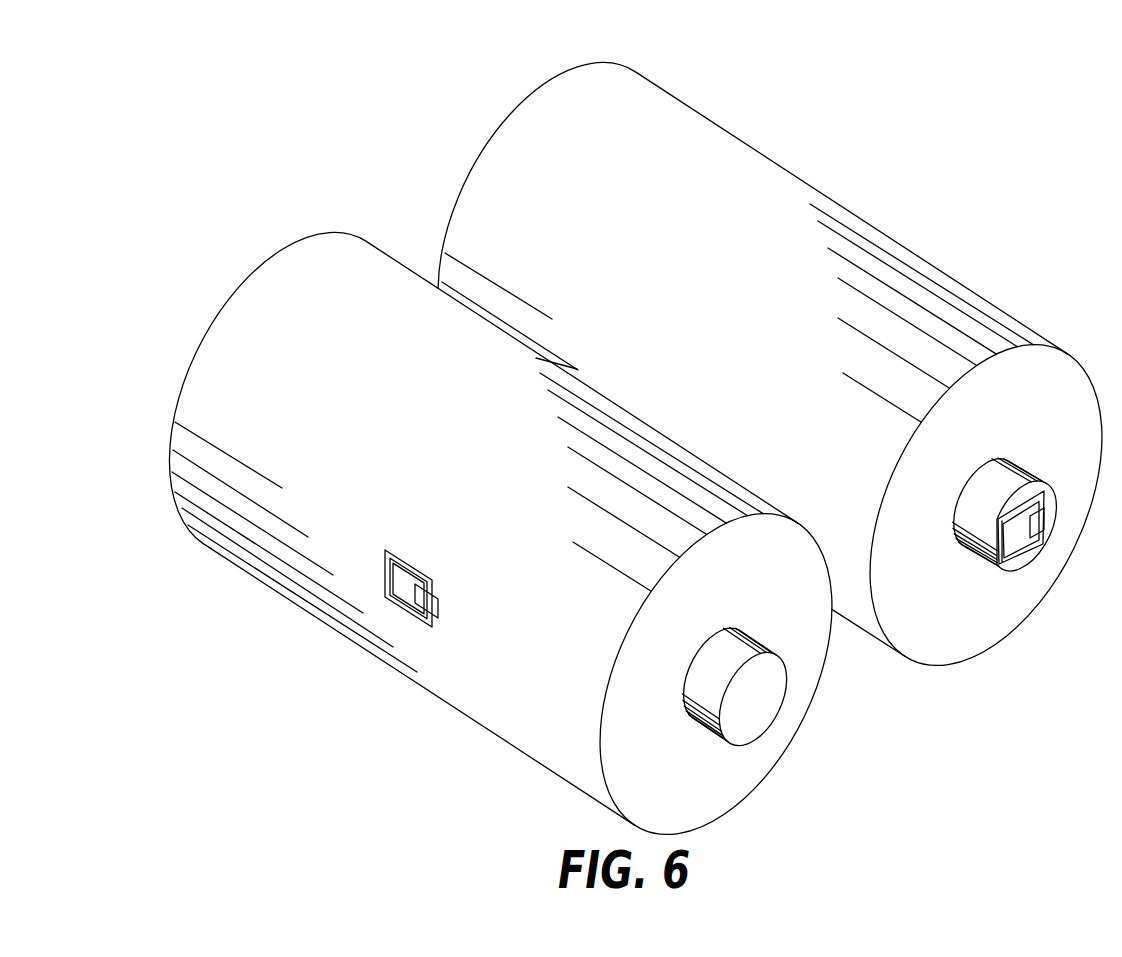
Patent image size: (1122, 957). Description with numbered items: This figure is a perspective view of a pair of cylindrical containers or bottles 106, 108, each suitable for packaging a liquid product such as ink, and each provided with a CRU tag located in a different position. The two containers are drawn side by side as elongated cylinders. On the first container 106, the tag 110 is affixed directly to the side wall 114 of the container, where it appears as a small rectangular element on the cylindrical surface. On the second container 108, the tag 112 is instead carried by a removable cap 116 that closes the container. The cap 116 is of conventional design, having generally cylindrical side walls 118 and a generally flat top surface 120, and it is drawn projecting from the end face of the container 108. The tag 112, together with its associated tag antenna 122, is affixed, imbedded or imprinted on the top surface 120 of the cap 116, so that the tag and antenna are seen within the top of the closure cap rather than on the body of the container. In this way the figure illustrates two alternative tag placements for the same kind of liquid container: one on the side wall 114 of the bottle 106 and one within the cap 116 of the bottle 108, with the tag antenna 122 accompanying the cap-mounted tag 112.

The cylindrical container or bottle 106 is at (524, 543).
The cylindrical container or bottle 108 is at (527, 118).
The tag 110 is at (435, 597).
The tag 112 is at (1020, 533).
The side wall 114 is at (403, 471).
The removable cap 116 is at (1021, 519).
The cylindrical side walls 118 is at (970, 493).
The top surface 120 is at (994, 566).
The tag antenna 122 is at (1006, 581).